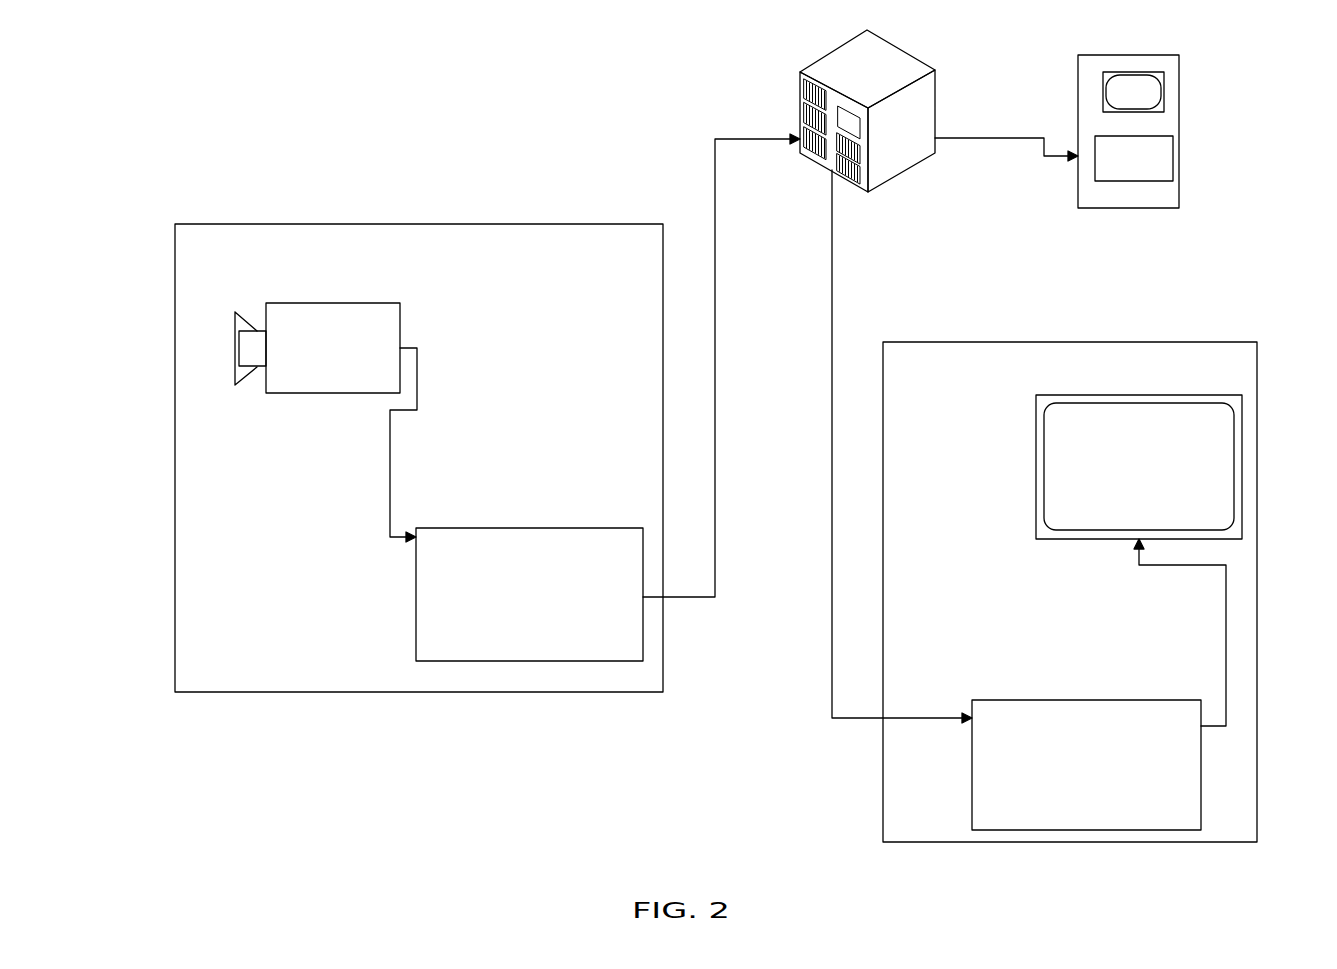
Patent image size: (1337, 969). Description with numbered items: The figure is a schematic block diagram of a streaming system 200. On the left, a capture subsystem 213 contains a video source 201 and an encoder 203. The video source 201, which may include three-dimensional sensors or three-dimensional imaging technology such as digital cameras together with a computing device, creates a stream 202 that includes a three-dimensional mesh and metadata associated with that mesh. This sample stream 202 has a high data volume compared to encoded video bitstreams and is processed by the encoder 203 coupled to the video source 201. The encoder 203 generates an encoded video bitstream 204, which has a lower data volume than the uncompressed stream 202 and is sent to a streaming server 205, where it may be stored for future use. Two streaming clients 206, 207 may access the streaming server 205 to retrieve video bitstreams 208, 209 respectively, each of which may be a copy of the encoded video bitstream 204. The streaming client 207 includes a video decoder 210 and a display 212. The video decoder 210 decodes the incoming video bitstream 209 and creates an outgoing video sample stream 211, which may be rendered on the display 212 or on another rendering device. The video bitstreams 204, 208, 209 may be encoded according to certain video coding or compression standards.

The streaming system 200 is at (373, 82).
The video source 201 is at (336, 303).
The stream 202 is at (380, 478).
The encoder 203 is at (548, 528).
The encoded video bitstream 204 is at (715, 172).
The streaming server 205 is at (800, 80).
The streaming client 206 is at (1179, 96).
The streaming client 207 is at (881, 787).
The video bitstream 208 is at (1000, 138).
The video bitstream 209 is at (830, 527).
The video decoder 210 is at (972, 800).
The outgoing video sample stream 211 is at (1234, 630).
The display 212 is at (1036, 465).
The capture subsystem 213 is at (325, 692).